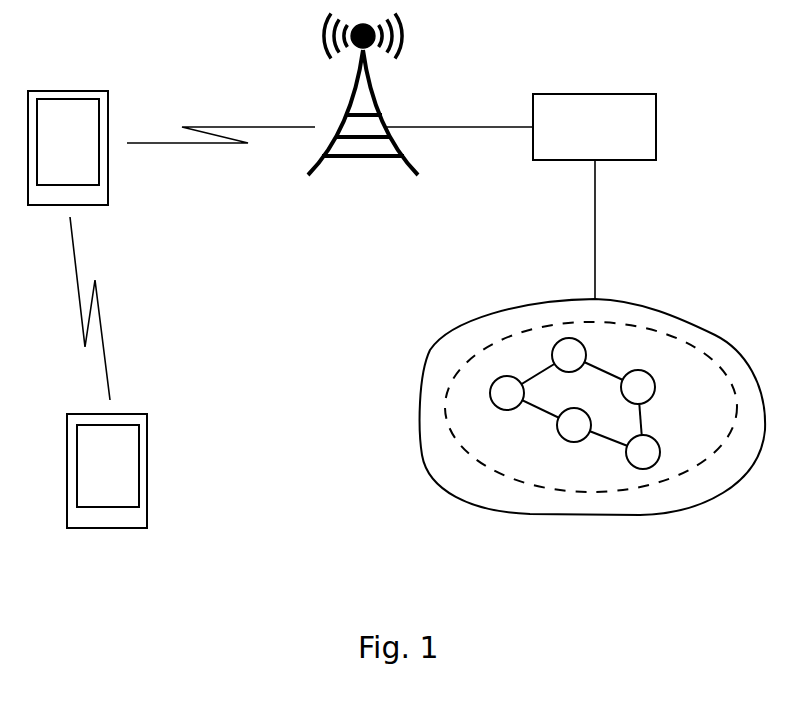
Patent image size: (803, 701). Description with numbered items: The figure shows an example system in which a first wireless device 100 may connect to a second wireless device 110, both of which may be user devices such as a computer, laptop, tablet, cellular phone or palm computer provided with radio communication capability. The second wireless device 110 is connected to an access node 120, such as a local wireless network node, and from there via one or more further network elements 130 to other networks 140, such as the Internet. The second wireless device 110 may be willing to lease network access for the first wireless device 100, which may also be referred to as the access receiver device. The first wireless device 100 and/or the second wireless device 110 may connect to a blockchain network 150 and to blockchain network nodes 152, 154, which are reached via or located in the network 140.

The first wireless device 100 is at (133, 518).
The second wireless device 110 is at (98, 199).
The access node 120 is at (378, 102).
The further network element 130 is at (615, 94).
The network 140 is at (723, 335).
The blockchain network 150 is at (475, 465).
The blockchain network node 152 is at (505, 393).
The blockchain network node 154 is at (640, 455).